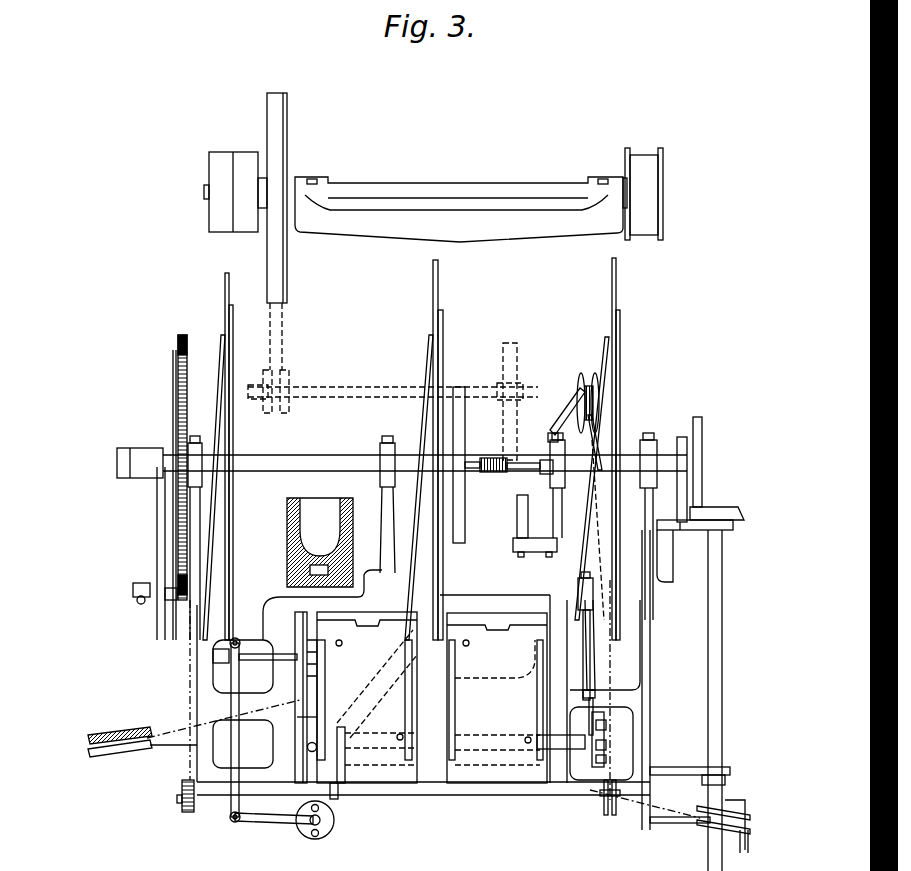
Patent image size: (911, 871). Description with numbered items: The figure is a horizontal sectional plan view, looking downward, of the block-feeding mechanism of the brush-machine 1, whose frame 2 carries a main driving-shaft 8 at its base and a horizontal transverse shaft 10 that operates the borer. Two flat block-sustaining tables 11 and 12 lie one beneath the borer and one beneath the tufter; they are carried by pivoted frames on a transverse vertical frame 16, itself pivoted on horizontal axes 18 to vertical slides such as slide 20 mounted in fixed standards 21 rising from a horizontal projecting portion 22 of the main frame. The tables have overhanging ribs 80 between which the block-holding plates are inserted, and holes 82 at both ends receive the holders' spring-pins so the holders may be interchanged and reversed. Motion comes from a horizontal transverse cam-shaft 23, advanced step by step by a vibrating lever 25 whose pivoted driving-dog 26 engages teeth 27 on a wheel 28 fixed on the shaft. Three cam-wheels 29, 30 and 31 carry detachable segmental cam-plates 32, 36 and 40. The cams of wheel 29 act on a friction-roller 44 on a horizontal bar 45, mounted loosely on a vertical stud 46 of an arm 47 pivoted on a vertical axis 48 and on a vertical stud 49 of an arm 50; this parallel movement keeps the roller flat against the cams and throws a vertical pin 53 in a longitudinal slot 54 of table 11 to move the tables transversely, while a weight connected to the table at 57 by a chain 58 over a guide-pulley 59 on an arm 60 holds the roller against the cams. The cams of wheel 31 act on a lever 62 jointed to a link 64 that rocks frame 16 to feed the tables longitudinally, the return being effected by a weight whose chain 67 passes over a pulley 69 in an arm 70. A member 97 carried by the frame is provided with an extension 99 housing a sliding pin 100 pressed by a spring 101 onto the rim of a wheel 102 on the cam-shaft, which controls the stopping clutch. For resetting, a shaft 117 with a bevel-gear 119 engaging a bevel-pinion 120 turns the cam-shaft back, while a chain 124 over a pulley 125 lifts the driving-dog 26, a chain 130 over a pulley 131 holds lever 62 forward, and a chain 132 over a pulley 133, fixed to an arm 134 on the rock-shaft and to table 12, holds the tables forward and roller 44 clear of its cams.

The brush-machine 1 is at (330, 328).
The frame 2 is at (322, 569).
The main driving-shaft 8 is at (433, 253).
The horizontal transverse shaft 10 is at (395, 387).
The block-sustaining table 11 is at (370, 690).
The block-sustaining table 12 is at (497, 698).
The transverse vertical frame 16 is at (561, 744).
The horizontal axes 18 is at (612, 742).
The vertical slide 20 is at (612, 755).
The fixed standards 21 is at (610, 725).
The horizontal projecting portion 22 is at (655, 698).
The cam-shaft 23 is at (292, 455).
The vibrating lever 25 is at (157, 512).
The driving-dog 26 is at (178, 600).
The teeth 27 is at (178, 340).
The wheel 28 is at (176, 366).
The cam-wheel 29 is at (221, 338).
The cam-wheel 30 is at (430, 340).
The cam-wheel 31 is at (605, 340).
The segmental cam-plate 32 is at (225, 285).
The segmental cam-plate 36 is at (433, 280).
The segmental cam-plate 40 is at (620, 290).
The friction-roller 44 is at (213, 656).
The horizontal bar 45 is at (231, 745).
The vertical stud 46 is at (232, 821).
The arm 47 is at (263, 824).
The vertical axis 48 is at (335, 823).
The vertical stud 49 is at (238, 640).
The arm 50 is at (268, 649).
The vertical pin 53 is at (307, 747).
The longitudinal slot 54 is at (300, 717).
The connection 57 is at (300, 700).
The chain 58 is at (180, 733).
The guide-pulley 59 is at (112, 735).
The arm 60 is at (140, 746).
The lever 62 is at (591, 574).
The link 64 is at (592, 650).
The chain 67 is at (597, 430).
The pulley 69 is at (585, 380).
The arm 70 is at (572, 412).
The overhanging ribs 80 is at (325, 660).
The holes 82 is at (342, 643).
The rod 97 is at (525, 462).
The extension 99 is at (500, 472).
The sliding pin 100 is at (470, 478).
The spring 101 is at (494, 457).
The wheel 102 is at (466, 396).
The shaft 117 is at (722, 662).
The bevel-gear 119 is at (739, 507).
The bevel-pinion 120 is at (702, 456).
The chain 124 is at (190, 677).
The pulley 125 is at (180, 805).
The chain 130 is at (612, 670).
The pulley 131 is at (612, 815).
The chain 132 is at (672, 805).
The pulley 133 is at (755, 818).
The arm 134 is at (683, 522).